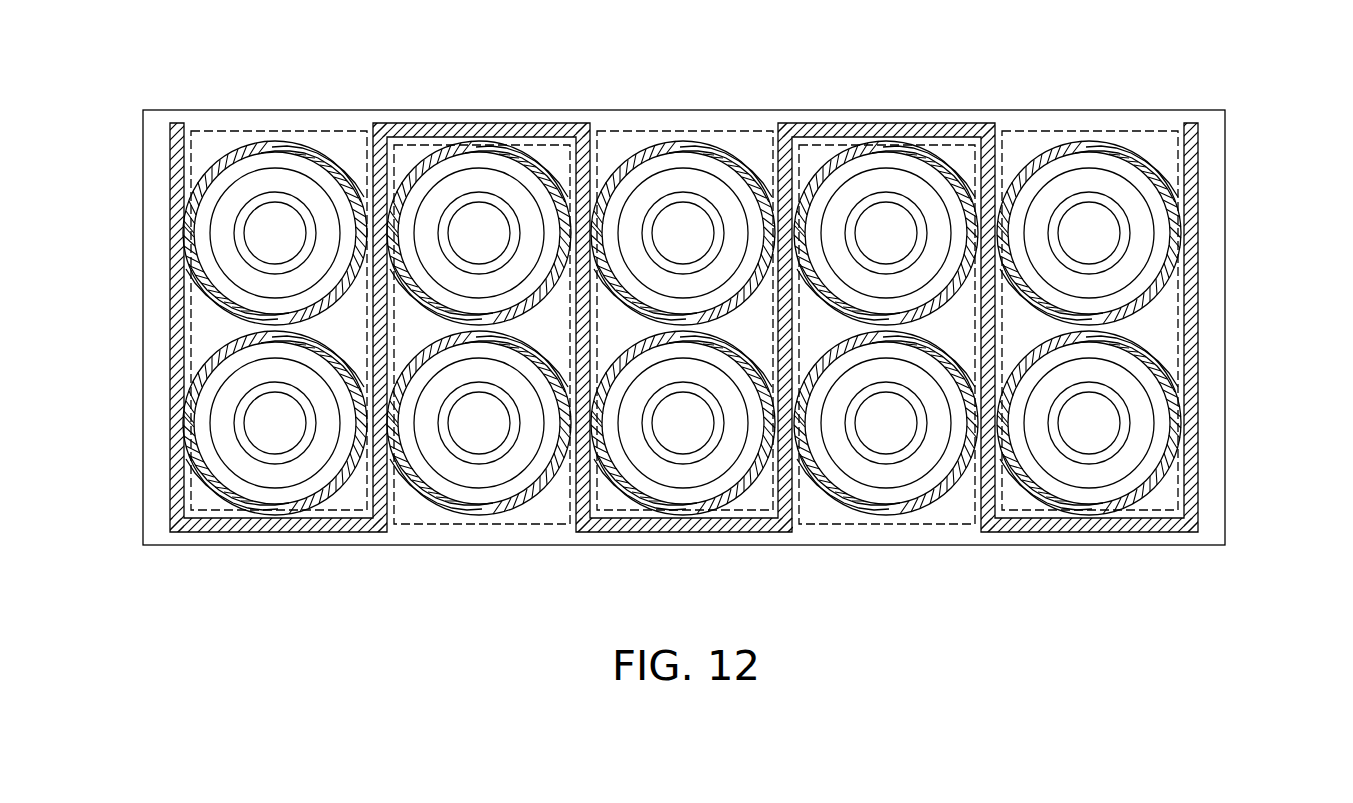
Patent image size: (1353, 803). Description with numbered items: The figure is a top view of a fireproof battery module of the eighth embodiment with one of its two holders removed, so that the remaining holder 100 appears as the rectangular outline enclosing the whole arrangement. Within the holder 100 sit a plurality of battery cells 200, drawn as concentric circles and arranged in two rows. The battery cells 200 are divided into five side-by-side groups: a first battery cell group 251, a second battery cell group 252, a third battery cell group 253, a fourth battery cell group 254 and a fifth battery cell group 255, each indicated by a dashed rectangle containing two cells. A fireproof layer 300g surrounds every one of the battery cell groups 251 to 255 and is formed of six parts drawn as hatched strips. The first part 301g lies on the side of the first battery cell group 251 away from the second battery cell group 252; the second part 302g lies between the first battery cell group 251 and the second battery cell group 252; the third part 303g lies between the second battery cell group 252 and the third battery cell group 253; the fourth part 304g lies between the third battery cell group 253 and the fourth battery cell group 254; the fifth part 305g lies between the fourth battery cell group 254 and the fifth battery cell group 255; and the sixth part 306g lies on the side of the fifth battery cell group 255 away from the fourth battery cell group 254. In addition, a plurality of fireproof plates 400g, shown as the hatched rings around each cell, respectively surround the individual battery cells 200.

The holder 100 is at (1205, 154).
The battery cell 200 is at (275, 423).
The first battery cell group 251 is at (344, 511).
The second battery cell group 252 is at (489, 525).
The third battery cell group 253 is at (740, 511).
The fourth battery cell group 254 is at (886, 525).
The fifth battery cell group 255 is at (1145, 511).
The fireproof layer 300g is at (1200, 283).
The first part 301g is at (172, 166).
The second part 302g is at (377, 162).
The third part 303g is at (583, 162).
The fourth part 304g is at (780, 162).
The fifth part 305g is at (995, 162).
The sixth part 306g is at (1190, 345).
The fireproof plate 400g is at (422, 167).